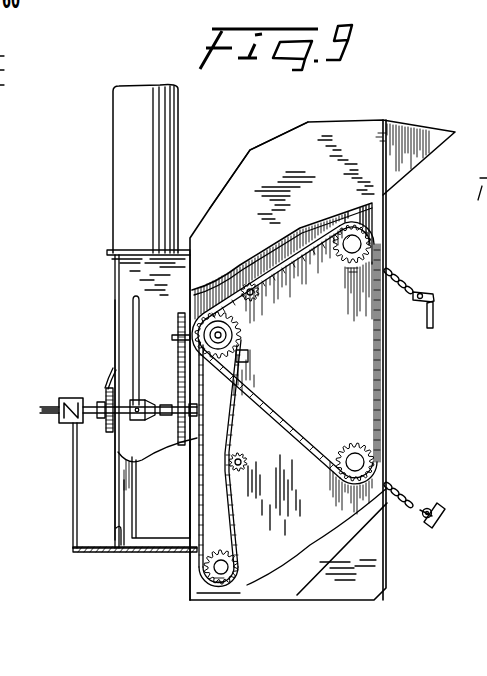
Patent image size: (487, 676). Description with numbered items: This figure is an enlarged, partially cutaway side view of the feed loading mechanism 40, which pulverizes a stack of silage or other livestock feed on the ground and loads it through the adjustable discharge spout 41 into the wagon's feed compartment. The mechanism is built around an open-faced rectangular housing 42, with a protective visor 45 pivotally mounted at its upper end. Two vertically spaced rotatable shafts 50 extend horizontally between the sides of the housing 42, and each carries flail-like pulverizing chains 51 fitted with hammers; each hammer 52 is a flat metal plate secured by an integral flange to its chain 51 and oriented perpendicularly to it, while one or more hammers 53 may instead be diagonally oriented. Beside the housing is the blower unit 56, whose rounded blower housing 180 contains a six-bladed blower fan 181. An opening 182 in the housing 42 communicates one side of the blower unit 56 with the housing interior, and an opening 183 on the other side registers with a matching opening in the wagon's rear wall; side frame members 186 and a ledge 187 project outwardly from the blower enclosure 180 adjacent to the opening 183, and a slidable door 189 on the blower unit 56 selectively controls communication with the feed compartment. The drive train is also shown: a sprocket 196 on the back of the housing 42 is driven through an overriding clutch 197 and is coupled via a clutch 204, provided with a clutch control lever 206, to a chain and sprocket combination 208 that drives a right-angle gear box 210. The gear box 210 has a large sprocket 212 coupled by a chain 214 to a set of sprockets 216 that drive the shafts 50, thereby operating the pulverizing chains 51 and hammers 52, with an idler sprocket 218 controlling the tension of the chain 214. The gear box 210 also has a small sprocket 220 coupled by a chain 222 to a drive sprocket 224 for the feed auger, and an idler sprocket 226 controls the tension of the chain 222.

The feed loading mechanism 40 is at (388, 605).
The discharge spout 41 is at (127, 178).
The open-faced rectangular housing 42 is at (285, 145).
The protective visor 45 is at (418, 132).
The shafts 50 is at (355, 244).
The chains 51 is at (412, 290).
The hammer 52 is at (445, 516).
The hammers 53 is at (434, 310).
The blower unit 56 is at (117, 293).
The blower housing 180 is at (153, 553).
The blower fan 181 is at (148, 498).
The opening 182 is at (133, 462).
The opening 183 is at (119, 532).
The side frame members 186 is at (75, 530).
The ledge 187 is at (80, 553).
The slidable door 189 is at (113, 520).
The sprocket 196 is at (108, 430).
The overriding clutch 197 is at (65, 398).
The clutch 204 is at (140, 420).
The clutch control lever 206 is at (133, 327).
The chain and sprocket combination 208 is at (180, 357).
The right-angle gear box 210 is at (244, 318).
The large sprocket 212 is at (243, 340).
The chain 214 is at (298, 433).
The sprockets 216 is at (362, 258).
The idler sprocket 218 is at (258, 296).
The small sprocket 220 is at (227, 340).
The chain 222 is at (238, 522).
The drive sprocket 224 is at (220, 580).
The idler sprocket 226 is at (246, 468).